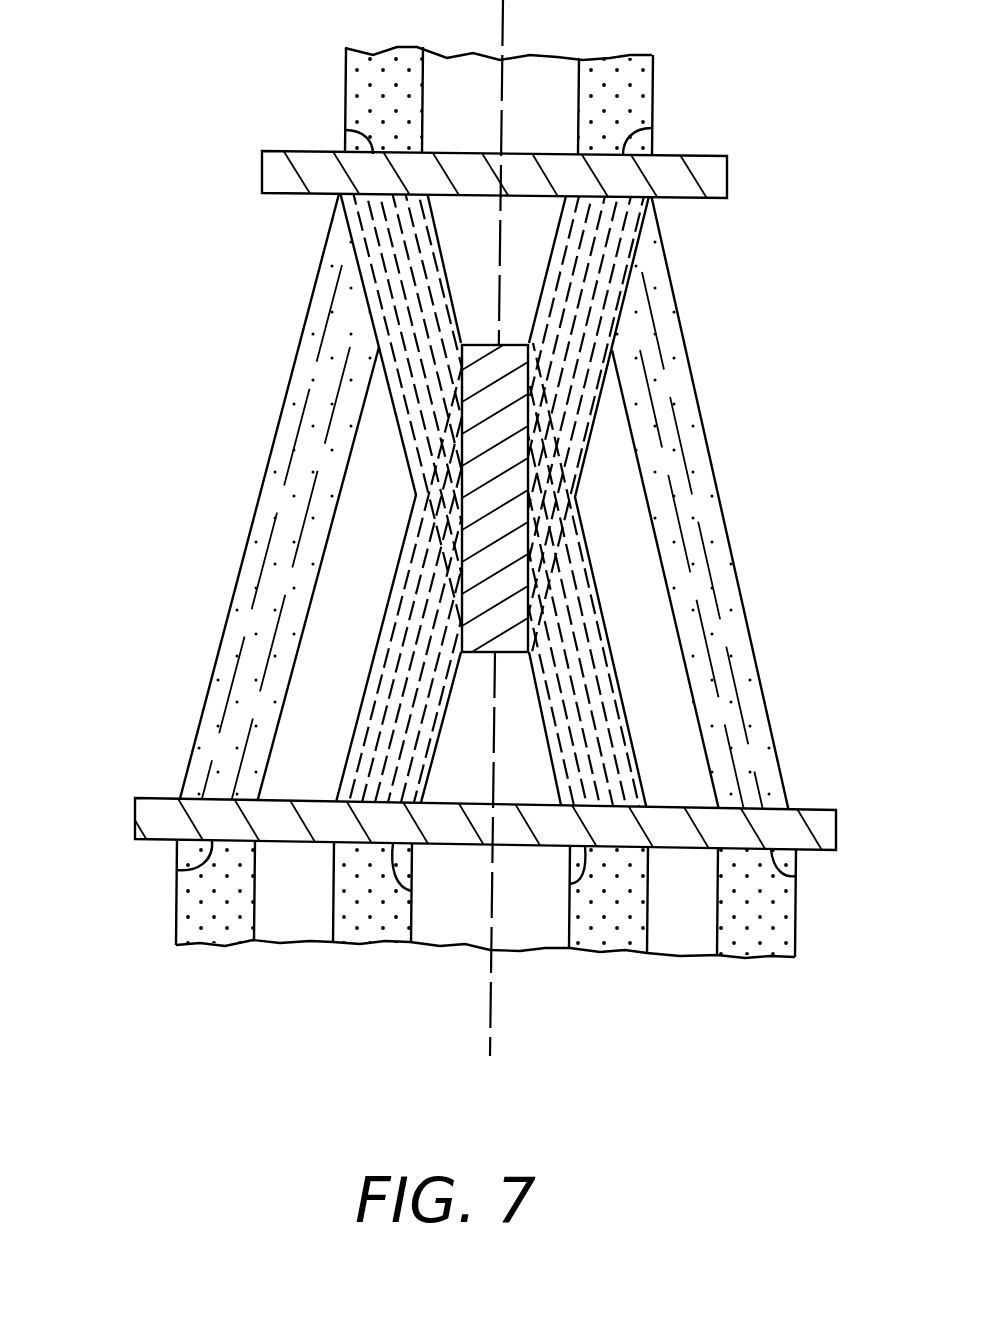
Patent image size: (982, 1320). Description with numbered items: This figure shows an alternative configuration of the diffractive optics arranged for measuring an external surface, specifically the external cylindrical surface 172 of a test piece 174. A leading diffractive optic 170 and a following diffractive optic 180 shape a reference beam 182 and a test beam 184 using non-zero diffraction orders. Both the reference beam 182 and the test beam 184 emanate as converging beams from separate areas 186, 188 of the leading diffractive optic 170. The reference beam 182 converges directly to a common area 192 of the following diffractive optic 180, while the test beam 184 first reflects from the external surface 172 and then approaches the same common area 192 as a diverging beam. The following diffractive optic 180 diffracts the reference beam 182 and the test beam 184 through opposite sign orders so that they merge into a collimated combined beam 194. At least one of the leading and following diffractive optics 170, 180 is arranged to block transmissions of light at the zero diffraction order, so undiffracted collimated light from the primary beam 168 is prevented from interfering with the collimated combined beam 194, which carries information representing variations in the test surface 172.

The primary beam 168 is at (226, 946).
The leading diffractive optic 170 is at (135, 828).
The external cylindrical surface 172 is at (460, 486).
The test piece 174 is at (515, 653).
The following diffractive optic 180 is at (262, 172).
The reference beam 182 is at (236, 602).
The test beam 184 is at (553, 252).
The separate area of the leading diffractive optic 186 is at (177, 870).
The separate area of the leading diffractive optic 188 is at (570, 884).
The common area 192 is at (345, 133).
The collimated combined beam 194 is at (346, 74).